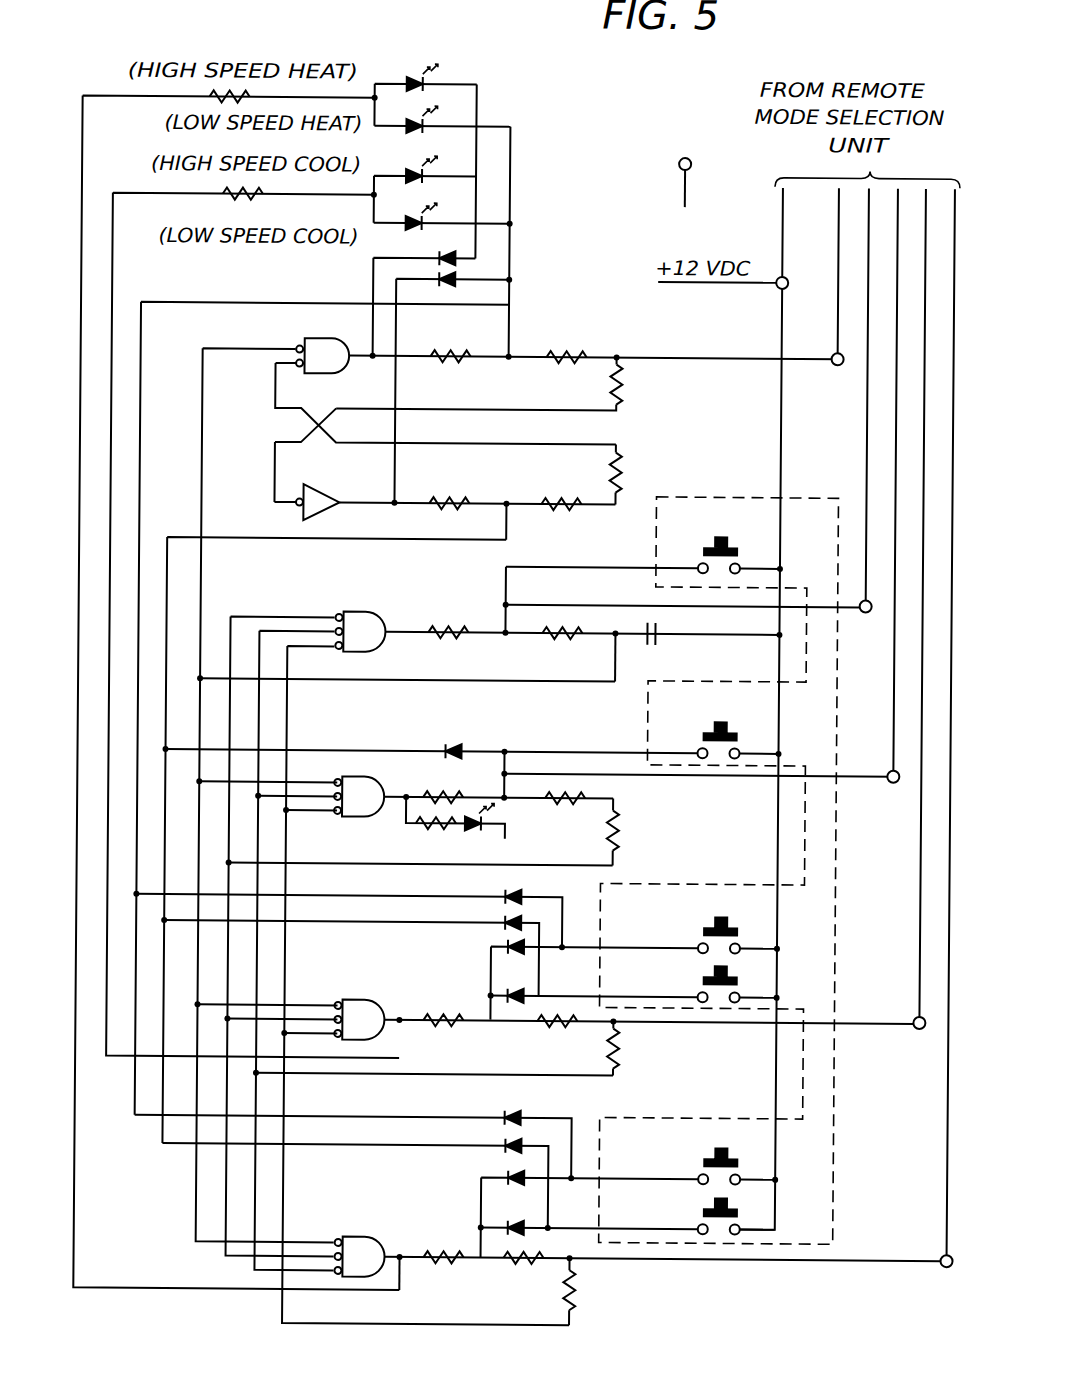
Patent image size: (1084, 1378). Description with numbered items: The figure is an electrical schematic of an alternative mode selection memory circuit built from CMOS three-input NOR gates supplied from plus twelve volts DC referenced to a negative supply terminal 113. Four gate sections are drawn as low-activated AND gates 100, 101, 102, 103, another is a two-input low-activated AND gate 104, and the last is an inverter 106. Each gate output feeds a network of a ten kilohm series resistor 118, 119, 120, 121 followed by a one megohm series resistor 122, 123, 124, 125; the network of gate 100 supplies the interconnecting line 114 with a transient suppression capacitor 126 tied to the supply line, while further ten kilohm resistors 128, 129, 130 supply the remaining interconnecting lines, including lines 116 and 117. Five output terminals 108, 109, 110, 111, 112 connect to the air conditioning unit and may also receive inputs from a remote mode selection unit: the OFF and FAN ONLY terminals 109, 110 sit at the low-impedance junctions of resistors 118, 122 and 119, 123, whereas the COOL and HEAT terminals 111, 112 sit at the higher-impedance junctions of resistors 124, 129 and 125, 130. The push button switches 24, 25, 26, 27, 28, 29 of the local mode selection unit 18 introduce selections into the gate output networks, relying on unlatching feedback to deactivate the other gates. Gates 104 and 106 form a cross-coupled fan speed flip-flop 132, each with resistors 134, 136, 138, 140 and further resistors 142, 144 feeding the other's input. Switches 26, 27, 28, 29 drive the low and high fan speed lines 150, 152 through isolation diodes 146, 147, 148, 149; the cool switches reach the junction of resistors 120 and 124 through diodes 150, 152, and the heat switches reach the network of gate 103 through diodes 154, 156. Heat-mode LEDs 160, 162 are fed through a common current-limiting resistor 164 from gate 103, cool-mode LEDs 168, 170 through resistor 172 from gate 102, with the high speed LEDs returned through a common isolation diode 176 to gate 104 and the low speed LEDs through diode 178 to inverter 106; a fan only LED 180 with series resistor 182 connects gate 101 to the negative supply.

The local mode selection unit 18 is at (798, 498).
The off switch 24 is at (712, 552).
The fan only switching element 25 is at (704, 736).
The low cool switching element 26 is at (723, 931).
The high cool switching element 27 is at (727, 986).
The low heat push button switch 28 is at (725, 1161).
The high heat push button switch 29 is at (727, 1218).
The low-activated AND gate 100 is at (372, 606).
The low-activated AND gate 101 is at (374, 784).
The low-activated AND gate 102 is at (386, 994).
The low-activated AND gate 103 is at (354, 1242).
The two-input low-activated AND gate 104 is at (302, 339).
The inverter 106 is at (324, 498).
The output terminal 108 is at (836, 365).
The OFF output terminal 109 is at (871, 612).
The FAN ONLY output terminal 110 is at (891, 770).
The COOL output terminal 111 is at (916, 1015).
The HEAT output terminal 112 is at (946, 1253).
The negative supply terminal 113 is at (675, 165).
The interconnecting line 114 is at (200, 595).
The interconnecting line 116 is at (259, 1094).
The interconnecting line 117 is at (284, 1314).
The series resistor 118 is at (454, 628).
The series resistor 119 is at (448, 777).
The series resistor 120 is at (444, 1021).
The series resistor 121 is at (434, 1259).
The series resistor 122 is at (561, 647).
The series resistor 123 is at (568, 806).
The series resistor 124 is at (530, 1036).
The series resistor 125 is at (516, 1276).
The transient suppression capacitor 126 is at (658, 641).
The series resistor 128 is at (618, 838).
The series resistor 129 is at (620, 1052).
The series resistor 130 is at (580, 1292).
The fan speed flip-flop 132 is at (278, 430).
The resistor 134 is at (450, 357).
The resistor 136 is at (450, 504).
The resistor 138 is at (572, 337).
The resistor 140 is at (568, 484).
The resistor 142 is at (618, 393).
The resistor 144 is at (618, 479).
The isolation diode 146 is at (520, 891).
The isolation diode 147 is at (505, 923).
The isolation diode 148 is at (522, 1113).
The isolation diode 149 is at (505, 1145).
The low fan speed line 150 is at (138, 350).
The high fan speed line 152 is at (166, 540).
The isolation diode 154 is at (497, 1175).
The isolation diode 156 is at (512, 1226).
The high speed heat LED 160 is at (424, 80).
The low speed heat LED 162 is at (442, 119).
The current-limiting resistor 164 is at (206, 99).
The high speed cool LED 168 is at (425, 185).
The low speed cool LED 170 is at (443, 214).
The current-limiting resistor 172 is at (219, 197).
The isolation diode 176 is at (435, 256).
The isolation diode 178 is at (452, 284).
The fan only LED 180 is at (488, 822).
The current-limiting resistor 182 is at (420, 828).